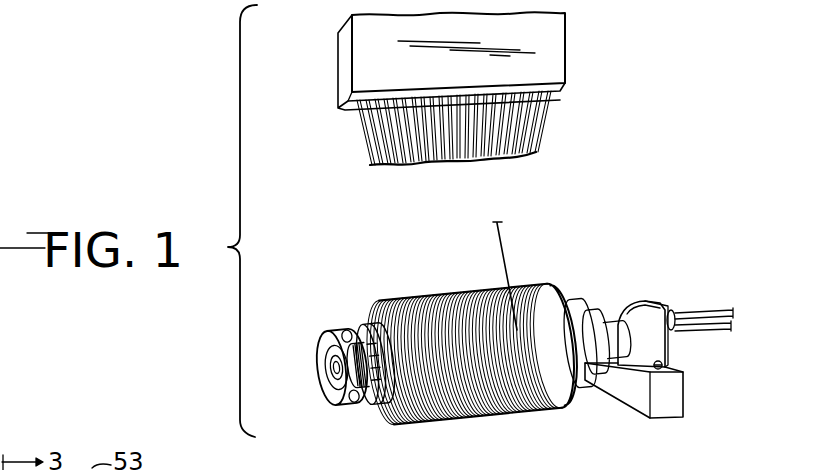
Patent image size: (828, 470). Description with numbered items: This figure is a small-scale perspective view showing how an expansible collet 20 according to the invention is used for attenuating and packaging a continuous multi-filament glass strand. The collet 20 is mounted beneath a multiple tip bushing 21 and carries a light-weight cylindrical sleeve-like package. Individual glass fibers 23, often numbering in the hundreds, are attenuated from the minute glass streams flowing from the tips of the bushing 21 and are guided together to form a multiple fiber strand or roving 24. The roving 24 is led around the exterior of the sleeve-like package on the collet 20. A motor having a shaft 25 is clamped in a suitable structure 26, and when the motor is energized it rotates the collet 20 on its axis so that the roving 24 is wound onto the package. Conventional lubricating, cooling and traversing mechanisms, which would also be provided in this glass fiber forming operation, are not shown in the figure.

The expansible collet 20 is at (335, 315).
The multiple tip bushing 21 is at (565, 62).
The glass fibers 23 is at (540, 135).
The roving 24 is at (505, 237).
The motor shaft 25 is at (604, 310).
The clamping structure 26 is at (677, 360).